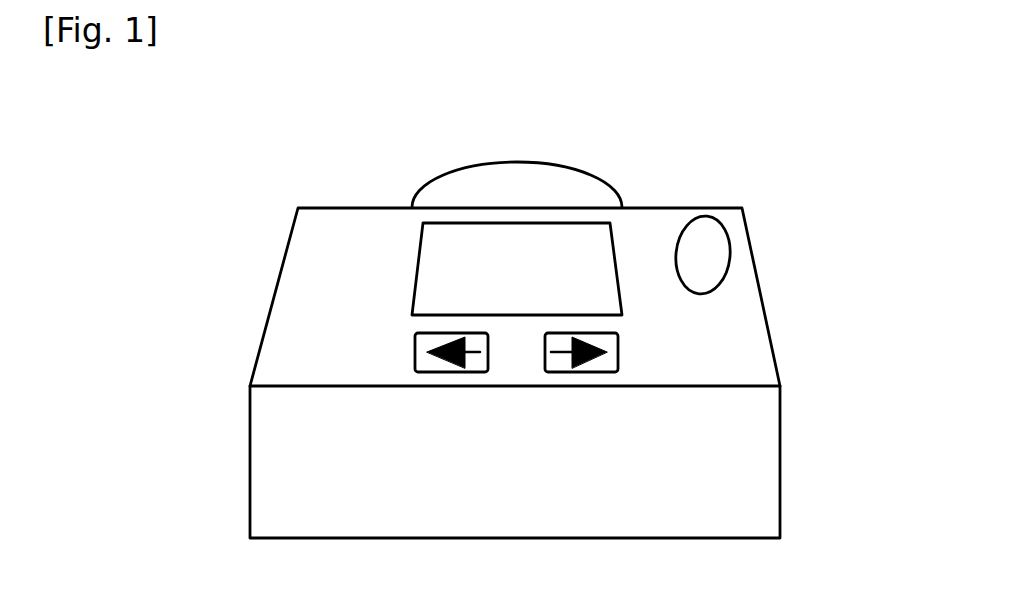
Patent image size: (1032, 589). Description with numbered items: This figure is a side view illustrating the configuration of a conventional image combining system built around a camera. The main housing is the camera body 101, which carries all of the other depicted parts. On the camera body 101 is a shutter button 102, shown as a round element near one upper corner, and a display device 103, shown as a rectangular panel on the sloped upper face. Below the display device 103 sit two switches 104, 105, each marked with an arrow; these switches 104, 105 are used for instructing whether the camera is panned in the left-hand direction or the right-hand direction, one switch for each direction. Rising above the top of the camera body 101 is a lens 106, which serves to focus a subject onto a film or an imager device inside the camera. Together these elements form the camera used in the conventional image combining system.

The camera body 101 is at (780, 505).
The shutter button 102 is at (706, 258).
The display device 103 is at (608, 260).
The switch 104 is at (443, 372).
The switch 105 is at (572, 372).
The lens 106 is at (580, 183).